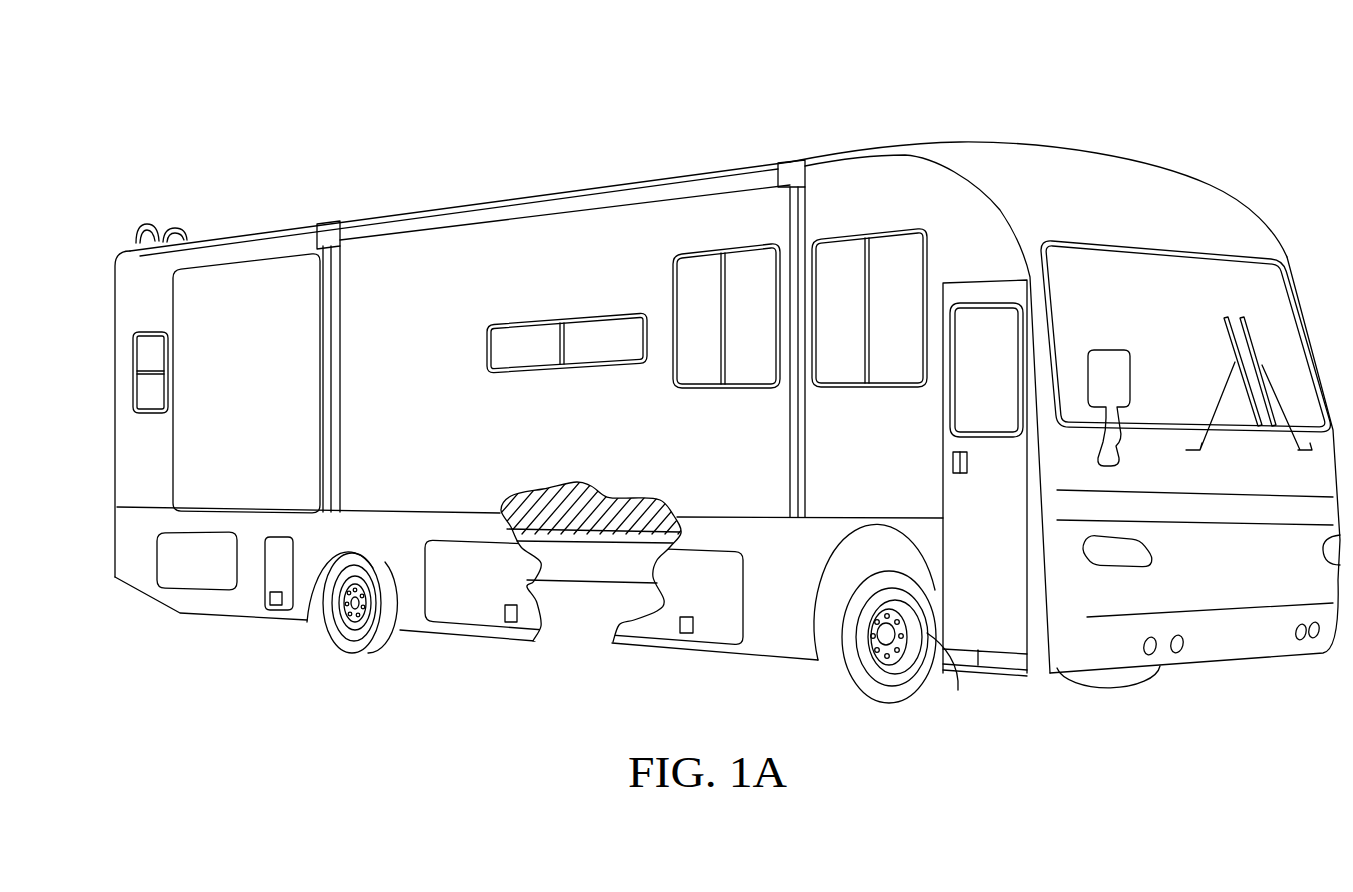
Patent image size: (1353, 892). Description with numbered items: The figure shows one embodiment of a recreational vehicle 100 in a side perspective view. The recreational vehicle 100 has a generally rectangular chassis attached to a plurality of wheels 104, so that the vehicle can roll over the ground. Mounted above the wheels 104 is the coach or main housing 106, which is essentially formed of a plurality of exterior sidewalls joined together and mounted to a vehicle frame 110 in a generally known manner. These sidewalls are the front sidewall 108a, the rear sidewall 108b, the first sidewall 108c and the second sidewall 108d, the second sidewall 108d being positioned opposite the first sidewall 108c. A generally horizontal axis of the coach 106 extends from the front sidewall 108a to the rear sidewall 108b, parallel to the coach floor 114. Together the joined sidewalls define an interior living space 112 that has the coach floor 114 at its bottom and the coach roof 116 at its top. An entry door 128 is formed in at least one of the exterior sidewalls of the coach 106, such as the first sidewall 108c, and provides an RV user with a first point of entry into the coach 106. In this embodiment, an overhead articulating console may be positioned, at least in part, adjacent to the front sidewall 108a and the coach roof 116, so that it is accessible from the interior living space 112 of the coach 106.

The recreational vehicle 100 is at (296, 120).
The wheels 104 is at (347, 648).
The coach 106 is at (518, 248).
The front sidewall 108a is at (1243, 592).
The rear sidewall 108b is at (103, 467).
The first sidewall 108c is at (733, 215).
The second sidewall 108d is at (1250, 193).
The vehicle frame 110 is at (617, 575).
The interior living space 112 is at (370, 309).
The coach floor 114 is at (567, 535).
The coach roof 116 is at (594, 174).
The entry door 128 is at (990, 620).